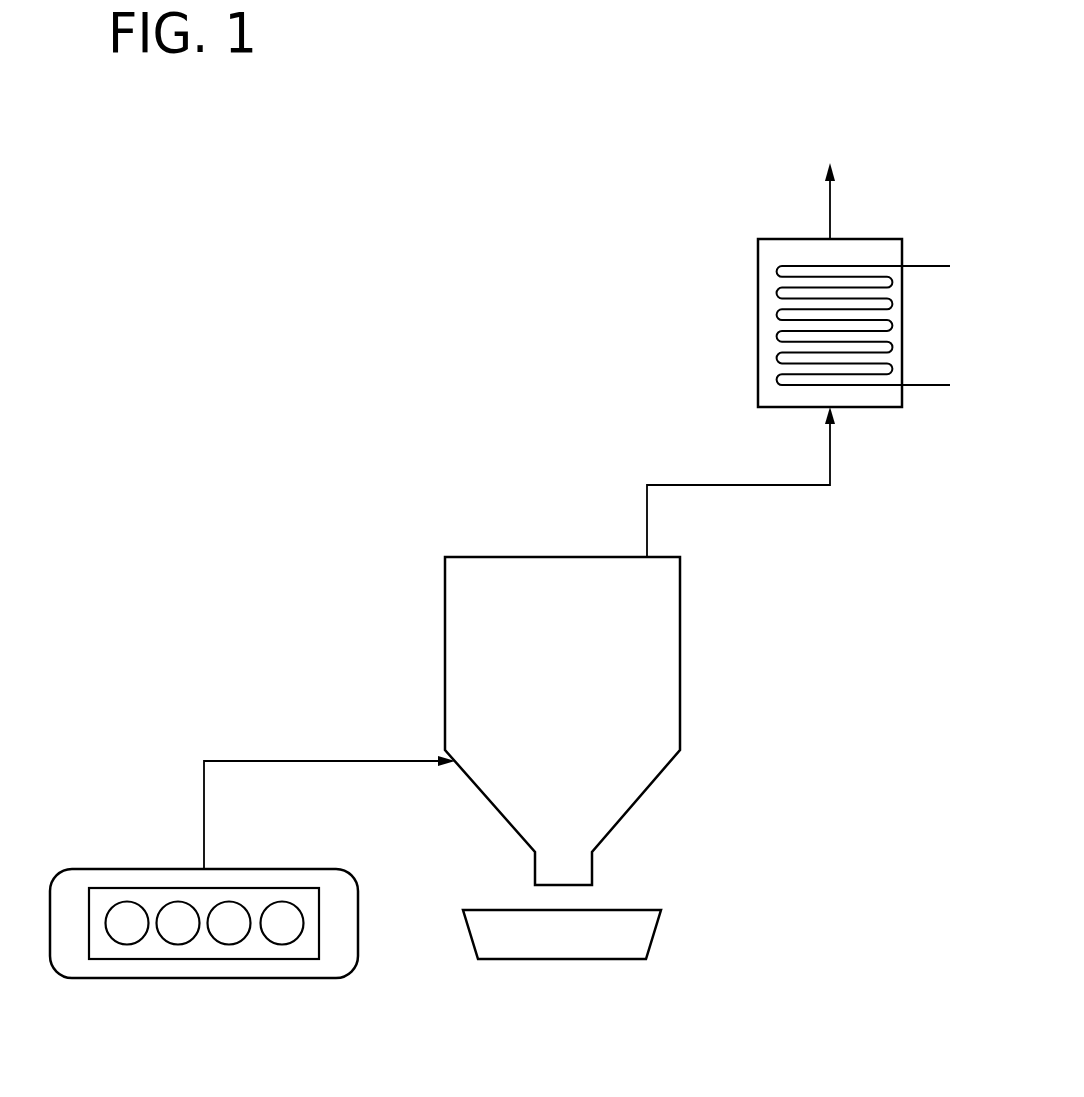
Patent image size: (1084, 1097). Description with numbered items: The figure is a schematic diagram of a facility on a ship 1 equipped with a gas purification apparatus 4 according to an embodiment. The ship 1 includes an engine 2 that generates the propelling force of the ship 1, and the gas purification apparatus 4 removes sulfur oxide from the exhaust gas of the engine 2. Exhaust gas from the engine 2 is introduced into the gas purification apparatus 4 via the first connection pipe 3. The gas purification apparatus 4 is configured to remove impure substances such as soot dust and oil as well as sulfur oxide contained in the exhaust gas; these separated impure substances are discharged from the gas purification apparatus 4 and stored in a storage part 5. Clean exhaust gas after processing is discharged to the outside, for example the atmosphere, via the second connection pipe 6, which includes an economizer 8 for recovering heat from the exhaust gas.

The ship 1 is at (897, 46).
The engine 2 is at (112, 868).
The first connection pipe 3 is at (278, 760).
The gas purification apparatus 4 is at (462, 557).
The storage part 5 is at (648, 910).
The second connection pipe 6 is at (752, 485).
The economizer 8 is at (890, 240).